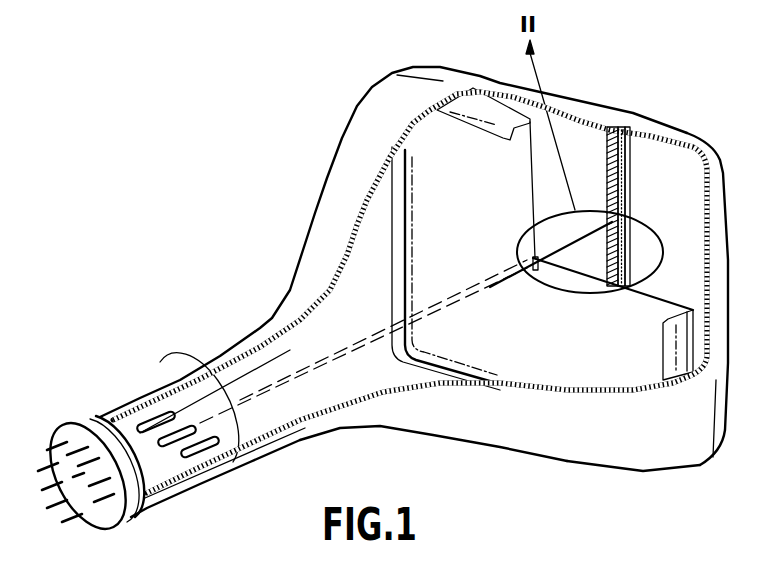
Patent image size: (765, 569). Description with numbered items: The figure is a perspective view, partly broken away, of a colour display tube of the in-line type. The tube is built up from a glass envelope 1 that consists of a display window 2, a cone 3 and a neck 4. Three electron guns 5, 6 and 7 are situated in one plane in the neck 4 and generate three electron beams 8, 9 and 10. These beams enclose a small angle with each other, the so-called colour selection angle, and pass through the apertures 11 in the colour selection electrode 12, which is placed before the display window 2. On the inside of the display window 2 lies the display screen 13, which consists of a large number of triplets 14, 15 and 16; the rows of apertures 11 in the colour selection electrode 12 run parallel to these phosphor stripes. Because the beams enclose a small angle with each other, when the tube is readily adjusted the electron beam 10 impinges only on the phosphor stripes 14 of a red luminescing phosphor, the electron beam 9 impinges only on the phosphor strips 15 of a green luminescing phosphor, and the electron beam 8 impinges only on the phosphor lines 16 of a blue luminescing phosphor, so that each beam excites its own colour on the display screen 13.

The glass envelope 1 is at (490, 427).
The display window 2 is at (727, 210).
The cone 3 is at (417, 414).
The neck 4 is at (210, 487).
The electron gun 5 is at (128, 396).
The electron gun 6 is at (143, 390).
The electron gun 7 is at (163, 411).
The electron beam 8 is at (200, 412).
The electron beam 9 is at (232, 427).
The electron beam 10 is at (258, 415).
The apertures 11 is at (538, 265).
The colour selection electrode 12 is at (427, 163).
The display screen 13 is at (692, 245).
The phosphor stripes 14 is at (600, 133).
The phosphor strips 15 is at (617, 127).
The phosphor lines 16 is at (632, 147).